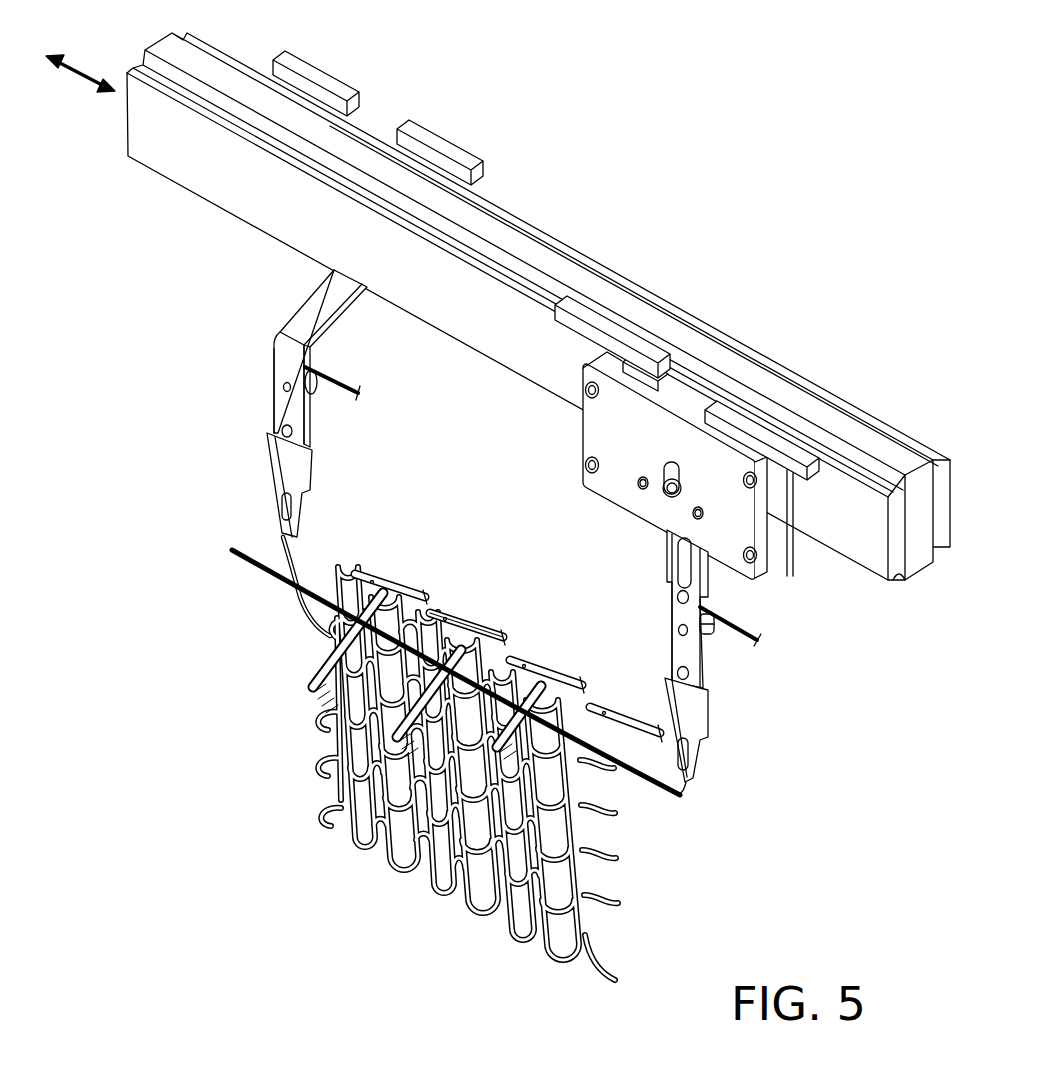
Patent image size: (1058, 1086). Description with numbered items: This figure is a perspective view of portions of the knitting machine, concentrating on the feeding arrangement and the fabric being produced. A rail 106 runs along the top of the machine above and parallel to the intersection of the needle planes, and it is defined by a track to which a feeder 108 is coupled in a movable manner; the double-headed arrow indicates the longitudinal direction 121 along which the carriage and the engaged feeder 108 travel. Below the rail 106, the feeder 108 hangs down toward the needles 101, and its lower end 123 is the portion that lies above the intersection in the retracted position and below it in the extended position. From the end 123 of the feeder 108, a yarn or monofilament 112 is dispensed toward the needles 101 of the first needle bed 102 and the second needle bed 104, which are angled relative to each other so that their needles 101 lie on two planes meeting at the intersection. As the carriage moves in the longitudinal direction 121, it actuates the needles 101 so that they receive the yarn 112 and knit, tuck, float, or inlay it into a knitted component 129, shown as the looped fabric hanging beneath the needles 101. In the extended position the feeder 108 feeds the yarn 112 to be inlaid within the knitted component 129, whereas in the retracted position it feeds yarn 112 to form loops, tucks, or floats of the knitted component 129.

The needles 101 is at (478, 625).
The first needle bed 102 is at (330, 662).
The second needle bed 104 is at (400, 584).
The rail 106 is at (536, 262).
The feeder 108 is at (373, 120).
The yarn or monofilament 112 is at (296, 556).
The longitudinal direction 121 is at (83, 78).
The end of feeder 123 is at (303, 527).
The knitted component 129 is at (370, 777).